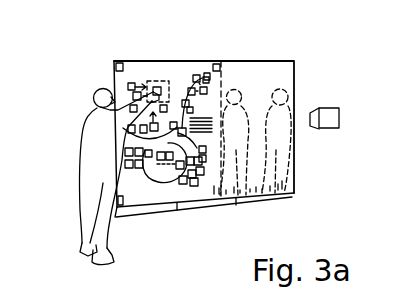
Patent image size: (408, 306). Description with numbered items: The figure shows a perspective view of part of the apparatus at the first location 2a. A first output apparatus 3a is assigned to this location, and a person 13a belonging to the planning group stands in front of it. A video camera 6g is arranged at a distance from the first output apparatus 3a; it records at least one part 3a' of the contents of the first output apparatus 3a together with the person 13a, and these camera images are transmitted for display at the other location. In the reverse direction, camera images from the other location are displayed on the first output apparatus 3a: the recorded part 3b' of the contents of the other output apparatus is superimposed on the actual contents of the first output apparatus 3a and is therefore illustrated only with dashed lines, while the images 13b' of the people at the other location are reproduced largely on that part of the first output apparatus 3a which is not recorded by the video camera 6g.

The first location 2a is at (74, 93).
The first output apparatus 3a is at (255, 107).
The part of the contents of the first output apparatus 3a' is at (168, 57).
The part of the contents of the further output apparatus 3b' is at (165, 97).
The video camera 6g is at (327, 130).
The person 13a is at (105, 241).
The images of the people 13b' is at (250, 212).